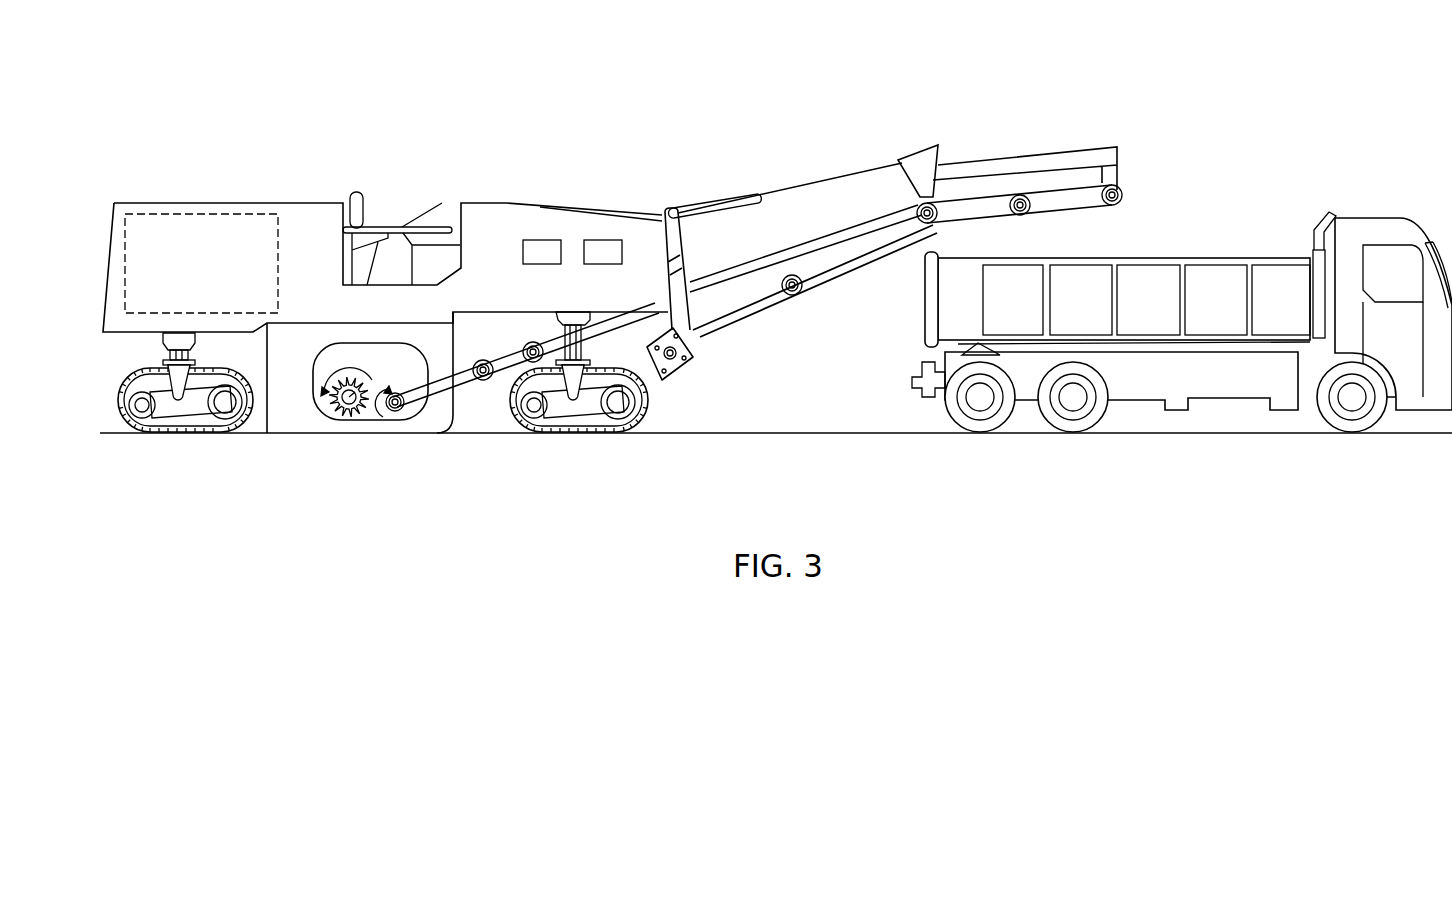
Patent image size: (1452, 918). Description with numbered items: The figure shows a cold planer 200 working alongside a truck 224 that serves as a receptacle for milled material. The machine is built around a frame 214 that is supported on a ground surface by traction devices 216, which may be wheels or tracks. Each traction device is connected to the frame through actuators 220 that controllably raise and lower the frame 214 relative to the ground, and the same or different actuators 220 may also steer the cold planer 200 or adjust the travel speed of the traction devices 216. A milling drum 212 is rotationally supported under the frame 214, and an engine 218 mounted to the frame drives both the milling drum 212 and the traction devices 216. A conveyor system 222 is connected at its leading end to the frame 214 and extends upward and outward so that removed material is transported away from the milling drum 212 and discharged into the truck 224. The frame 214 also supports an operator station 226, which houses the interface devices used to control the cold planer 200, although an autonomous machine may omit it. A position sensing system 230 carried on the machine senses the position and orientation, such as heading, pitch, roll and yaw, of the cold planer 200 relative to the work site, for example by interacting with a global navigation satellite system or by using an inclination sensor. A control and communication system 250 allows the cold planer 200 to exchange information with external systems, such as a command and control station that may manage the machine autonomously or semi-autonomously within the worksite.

The cold planer 200 is at (229, 74).
The milling drum 212 is at (355, 405).
The frame 214 is at (485, 210).
The traction devices 216 is at (125, 413).
The engine 218 is at (200, 212).
The actuators 220 is at (183, 378).
The conveyor system 222 is at (1117, 138).
The truck 224 is at (1267, 203).
The operator station 226 is at (369, 176).
The position sensing system 230 is at (606, 266).
The control and communication system 250 is at (545, 266).